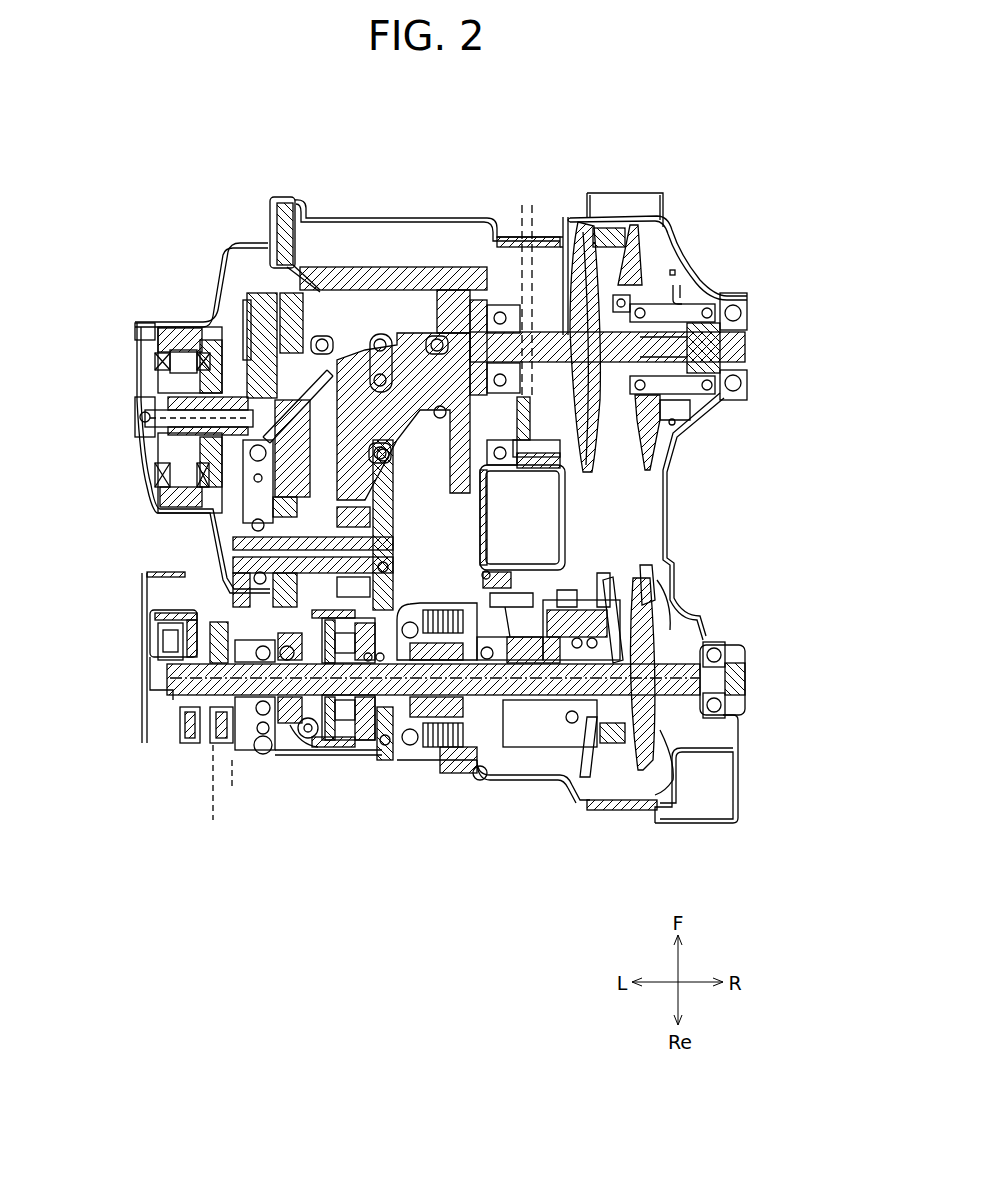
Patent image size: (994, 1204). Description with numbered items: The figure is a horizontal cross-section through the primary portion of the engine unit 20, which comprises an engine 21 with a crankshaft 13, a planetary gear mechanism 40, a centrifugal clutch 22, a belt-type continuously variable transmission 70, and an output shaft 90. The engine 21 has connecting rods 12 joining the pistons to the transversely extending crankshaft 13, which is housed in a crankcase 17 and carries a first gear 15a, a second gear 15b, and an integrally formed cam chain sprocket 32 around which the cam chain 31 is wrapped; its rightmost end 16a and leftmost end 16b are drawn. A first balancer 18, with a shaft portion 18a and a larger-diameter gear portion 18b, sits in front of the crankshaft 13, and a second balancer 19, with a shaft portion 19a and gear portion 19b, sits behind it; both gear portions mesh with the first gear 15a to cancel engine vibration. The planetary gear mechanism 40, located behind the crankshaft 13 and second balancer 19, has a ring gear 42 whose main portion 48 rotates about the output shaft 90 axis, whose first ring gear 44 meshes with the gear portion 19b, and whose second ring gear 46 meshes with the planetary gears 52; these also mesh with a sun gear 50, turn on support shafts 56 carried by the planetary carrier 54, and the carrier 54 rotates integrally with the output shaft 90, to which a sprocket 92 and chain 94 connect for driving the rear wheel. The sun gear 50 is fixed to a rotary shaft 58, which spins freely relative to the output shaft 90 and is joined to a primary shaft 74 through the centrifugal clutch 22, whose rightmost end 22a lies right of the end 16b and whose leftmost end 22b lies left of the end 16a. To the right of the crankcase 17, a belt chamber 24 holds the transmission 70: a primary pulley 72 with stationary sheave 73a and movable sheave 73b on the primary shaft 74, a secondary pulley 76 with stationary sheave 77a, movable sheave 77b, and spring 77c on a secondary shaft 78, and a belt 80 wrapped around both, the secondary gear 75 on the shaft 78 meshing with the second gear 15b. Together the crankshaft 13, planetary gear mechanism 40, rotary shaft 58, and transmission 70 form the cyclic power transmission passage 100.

The engine unit 20 is at (232, 178).
The connecting rods 12 is at (262, 300).
The crankshaft 13 is at (160, 420).
The first gear 15a is at (235, 345).
The second gear 15b is at (530, 473).
The rightmost end of the crankshaft 16a is at (640, 423).
The leftmost end of the crankshaft 16b is at (140, 395).
The crankcase 17 is at (495, 245).
The first balancer 18 is at (397, 263).
The shaft portion 18a is at (360, 267).
The gear portion 18b is at (285, 197).
The second balancer 19 is at (240, 507).
The shaft portion 19a is at (262, 540).
The gear portion 19b is at (210, 455).
The engine 21 is at (350, 330).
The centrifugal clutch 22 is at (443, 757).
The rightmost end of the centrifugal clutch 22a is at (493, 773).
The leftmost end of the centrifugal clutch 22b is at (413, 715).
The belt chamber 24 is at (718, 267).
The cam chain 31 is at (535, 210).
The cam chain sprocket 32 is at (640, 457).
The planetary gear mechanism 40 is at (280, 753).
The ring gear 42 is at (210, 573).
The first ring gear 44 is at (257, 640).
The second ring gear 46 is at (360, 745).
The main portion 48 is at (243, 760).
The sun gear 50 is at (322, 763).
The planetary gears 52 is at (313, 753).
The planetary carrier 54 is at (297, 747).
The support shafts 56 is at (227, 660).
The rotary shaft 58 is at (457, 757).
The belt-type continuously variable transmission 70 is at (662, 280).
The primary pulley 72 is at (727, 760).
The stationary sheave 73a is at (663, 727).
The movable sheave 73b is at (565, 793).
The primary shaft 74 is at (722, 668).
The secondary gear 75 is at (510, 255).
The secondary pulley 76 is at (668, 232).
The stationary sheave 77a is at (578, 222).
The movable sheave 77b is at (640, 250).
The spring 77c is at (660, 288).
The secondary shaft 78 is at (700, 345).
The belt 80 is at (608, 228).
The output shaft 90 is at (160, 697).
The sprocket 92 is at (213, 733).
The chain 94 is at (195, 800).
The cyclic power transmission passage 100 is at (645, 556).